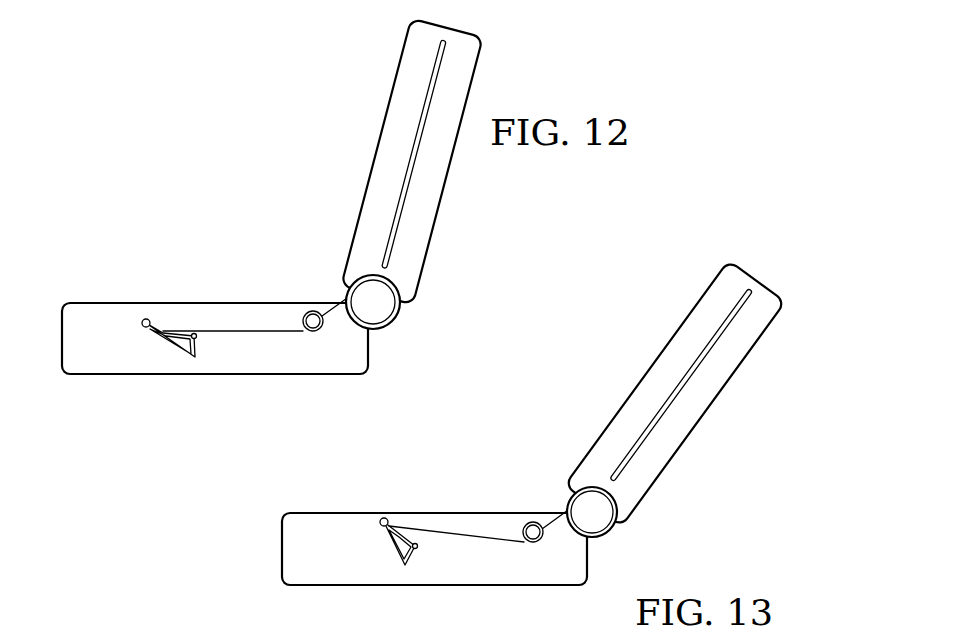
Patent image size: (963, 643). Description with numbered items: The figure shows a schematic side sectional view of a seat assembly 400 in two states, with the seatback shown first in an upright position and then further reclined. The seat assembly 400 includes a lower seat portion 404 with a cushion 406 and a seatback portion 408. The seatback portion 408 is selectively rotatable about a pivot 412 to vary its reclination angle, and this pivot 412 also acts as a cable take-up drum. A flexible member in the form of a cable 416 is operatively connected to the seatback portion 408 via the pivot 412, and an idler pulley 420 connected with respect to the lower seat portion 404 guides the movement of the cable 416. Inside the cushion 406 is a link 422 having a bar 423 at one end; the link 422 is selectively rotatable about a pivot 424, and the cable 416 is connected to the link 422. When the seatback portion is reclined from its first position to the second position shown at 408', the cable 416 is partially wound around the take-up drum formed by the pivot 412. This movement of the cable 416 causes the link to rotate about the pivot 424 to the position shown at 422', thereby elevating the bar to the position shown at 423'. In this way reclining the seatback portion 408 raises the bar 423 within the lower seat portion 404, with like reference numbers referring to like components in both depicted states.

In FIG. 12, the seat assembly 400 is at (213, 138).
In FIG. 13, the seat assembly 400 is at (564, 350).
In FIG. 12, the lower seat portion 404 is at (82, 313).
In FIG. 13, the lower seat portion 404 is at (300, 523).
In FIG. 12, the cushion 406 is at (62, 338).
In FIG. 13, the cushion 406 is at (292, 557).
In FIG. 12, the seatback portion 408 is at (446, 157).
In FIG. 13, the seatback portion second position 408' is at (691, 378).
In FIG. 12, the pivot 412 is at (391, 323).
In FIG. 13, the pivot 412 is at (608, 530).
In FIG. 12, the cable 416 is at (232, 331).
In FIG. 13, the cable 416 is at (468, 536).
In FIG. 12, the idler pulley 420 is at (308, 315).
In FIG. 13, the idler pulley 420 is at (525, 523).
In FIG. 12, the link 422 is at (170, 296).
In FIG. 13, the link rotated position 422' is at (397, 506).
In FIG. 12, the bar 423 is at (128, 281).
In FIG. 13, the bar elevated position 423' is at (359, 487).
In FIG. 12, the pivot 424 is at (197, 338).
In FIG. 13, the pivot 424 is at (418, 548).